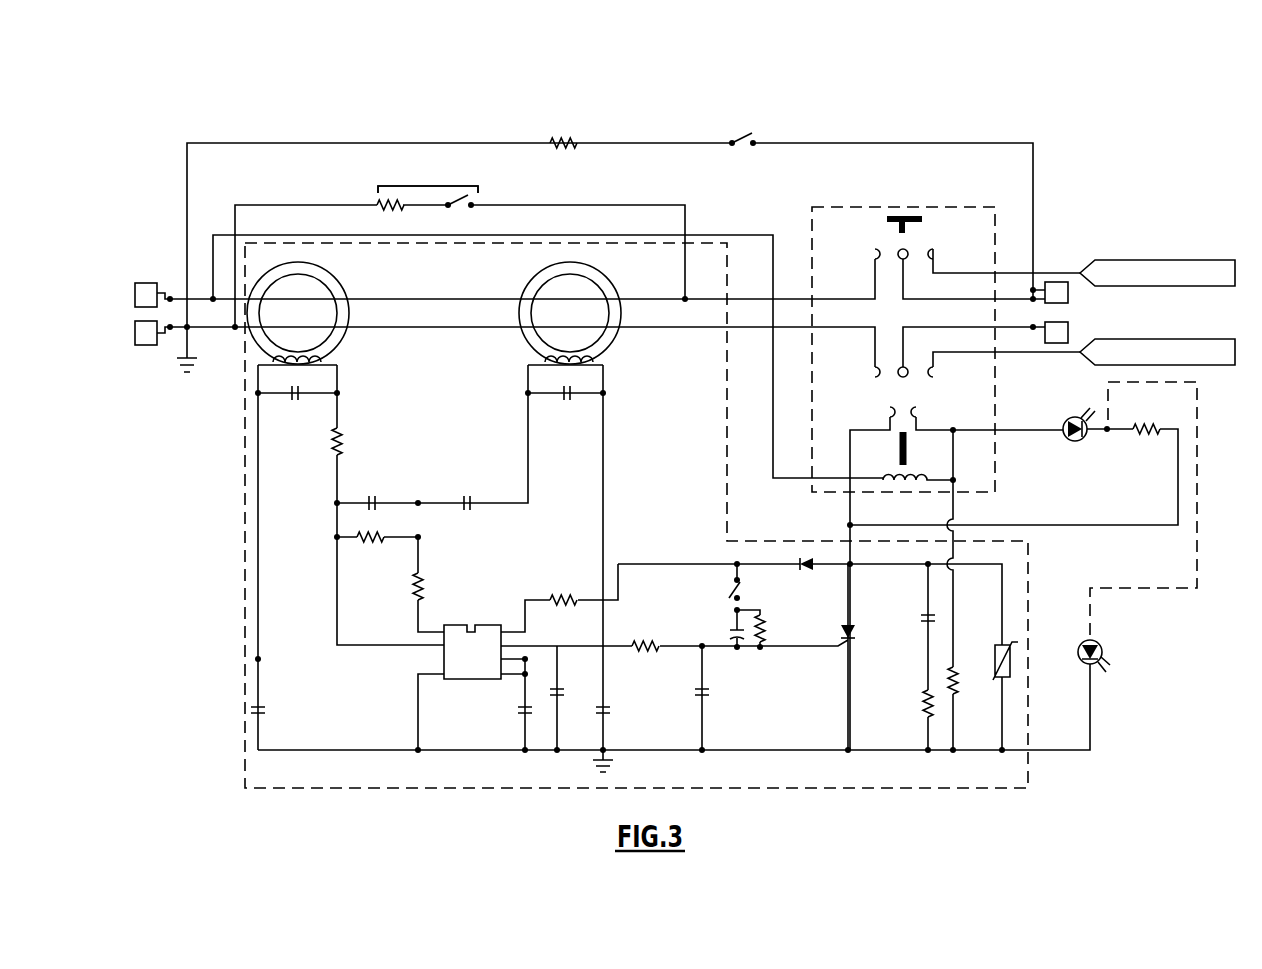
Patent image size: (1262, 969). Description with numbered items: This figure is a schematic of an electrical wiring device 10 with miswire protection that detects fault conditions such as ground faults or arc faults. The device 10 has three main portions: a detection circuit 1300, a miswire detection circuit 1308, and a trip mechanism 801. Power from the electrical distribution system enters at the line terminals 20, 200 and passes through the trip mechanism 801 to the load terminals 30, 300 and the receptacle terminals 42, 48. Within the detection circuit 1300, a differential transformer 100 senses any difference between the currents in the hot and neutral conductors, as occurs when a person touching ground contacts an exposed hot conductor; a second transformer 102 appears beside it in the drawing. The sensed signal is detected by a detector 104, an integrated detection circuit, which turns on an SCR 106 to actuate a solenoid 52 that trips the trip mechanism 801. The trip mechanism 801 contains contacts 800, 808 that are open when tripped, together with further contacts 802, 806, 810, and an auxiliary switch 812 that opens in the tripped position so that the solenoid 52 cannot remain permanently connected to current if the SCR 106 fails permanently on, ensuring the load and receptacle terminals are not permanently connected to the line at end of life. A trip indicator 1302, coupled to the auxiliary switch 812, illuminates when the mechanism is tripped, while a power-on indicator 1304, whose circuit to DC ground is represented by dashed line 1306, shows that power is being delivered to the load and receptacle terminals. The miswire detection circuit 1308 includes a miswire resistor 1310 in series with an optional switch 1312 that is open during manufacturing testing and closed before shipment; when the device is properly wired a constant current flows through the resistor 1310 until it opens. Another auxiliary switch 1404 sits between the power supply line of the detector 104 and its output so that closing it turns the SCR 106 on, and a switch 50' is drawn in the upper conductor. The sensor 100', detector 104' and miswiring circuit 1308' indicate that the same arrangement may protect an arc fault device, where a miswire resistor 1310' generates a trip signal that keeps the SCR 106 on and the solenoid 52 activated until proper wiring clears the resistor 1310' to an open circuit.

The electrical wiring device 10 is at (690, 123).
The line terminal 20 is at (148, 347).
The line terminal 200 is at (140, 283).
The load terminal 300 is at (1056, 282).
The load terminal 30 is at (1068, 332).
The receptacle terminal 48 is at (1179, 260).
The receptacle terminal 42 is at (1179, 339).
The test switch 50' is at (759, 156).
The miswire detection circuit 1308 is at (370, 173).
The miswiring circuit 1308' is at (428, 189).
The miswire resistor 1310 is at (360, 215).
The optional switch 1312 is at (462, 210).
The differential transformer 100 is at (350, 313).
The sensor 100' is at (298, 313).
The grounded neutral transformer 102 is at (621, 266).
The trip mechanism 801 is at (840, 207).
The relay armature 802 is at (905, 215).
The movable contact 806 is at (910, 250).
The fixed contact 810 is at (937, 252).
The contact 800 is at (870, 365).
The contact 808 is at (935, 376).
The auxiliary switch 812 is at (888, 413).
The solenoid 52 is at (909, 486).
The trip indicator 1302 is at (1073, 414).
The power-on indicator circuit 1306 is at (1197, 573).
The power-on indicator 1304 is at (1098, 639).
The detection circuit 1300 is at (245, 565).
The detector 104 is at (492, 621).
The detector 104' is at (471, 653).
The auxiliary switch 1404 is at (729, 587).
The SCR 106 is at (840, 631).
The miswire resistor 1310' is at (911, 675).